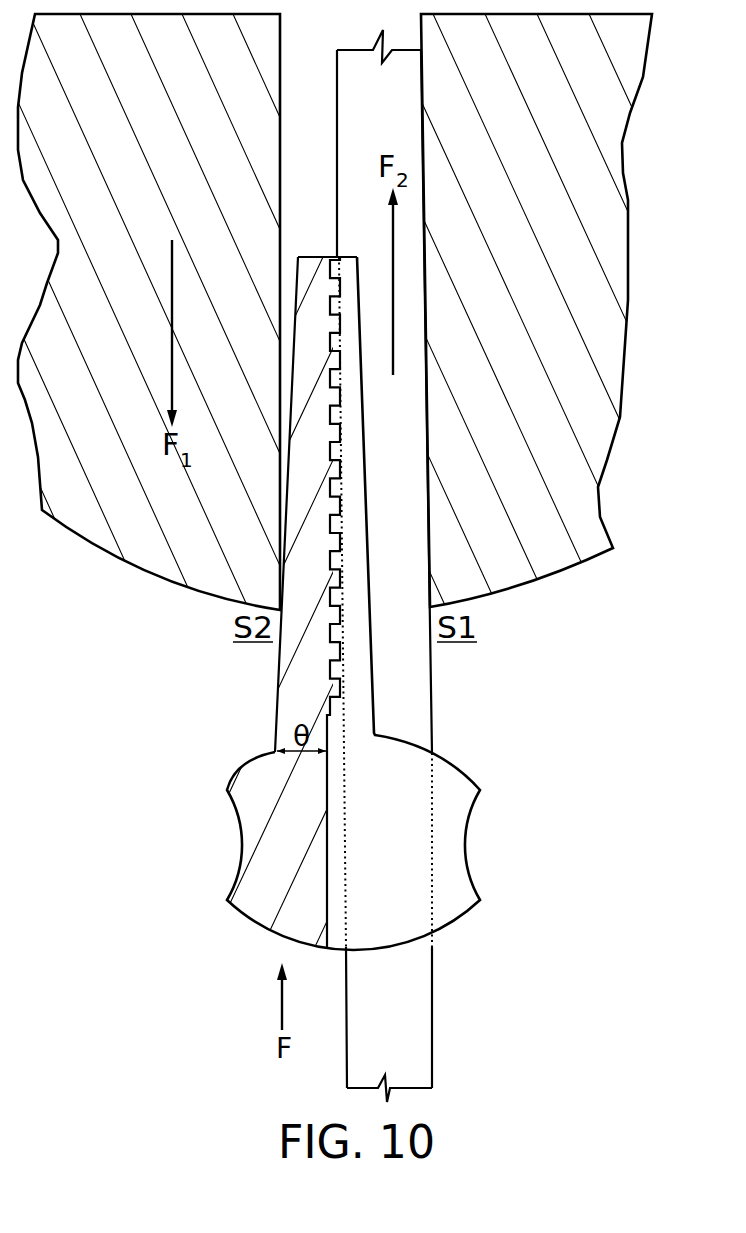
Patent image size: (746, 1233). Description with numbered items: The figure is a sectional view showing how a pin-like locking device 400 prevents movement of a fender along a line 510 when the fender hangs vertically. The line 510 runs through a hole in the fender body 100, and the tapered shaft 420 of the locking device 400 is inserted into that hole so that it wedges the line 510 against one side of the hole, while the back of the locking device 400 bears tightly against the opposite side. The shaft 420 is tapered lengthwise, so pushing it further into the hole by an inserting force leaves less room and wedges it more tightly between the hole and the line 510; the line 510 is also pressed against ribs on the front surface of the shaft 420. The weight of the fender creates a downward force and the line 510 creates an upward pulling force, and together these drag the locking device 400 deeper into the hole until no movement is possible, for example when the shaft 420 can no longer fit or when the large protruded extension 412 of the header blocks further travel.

The workpiece / body with slot 100 is at (633, 281).
The locking device 400 is at (500, 848).
The large protruded extension 412 is at (272, 862).
The shaft 420 is at (315, 663).
The line 510 is at (407, 1005).